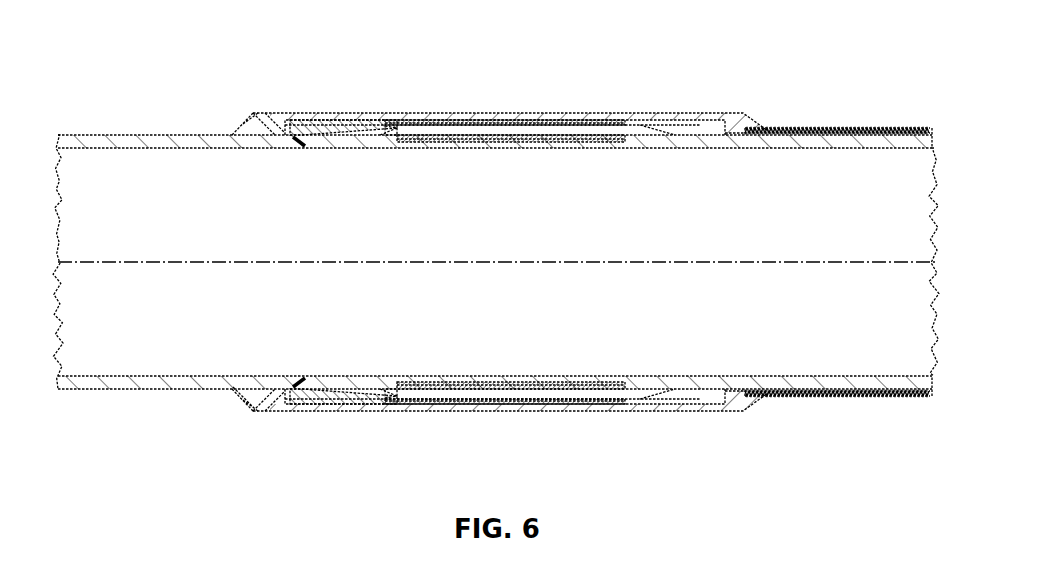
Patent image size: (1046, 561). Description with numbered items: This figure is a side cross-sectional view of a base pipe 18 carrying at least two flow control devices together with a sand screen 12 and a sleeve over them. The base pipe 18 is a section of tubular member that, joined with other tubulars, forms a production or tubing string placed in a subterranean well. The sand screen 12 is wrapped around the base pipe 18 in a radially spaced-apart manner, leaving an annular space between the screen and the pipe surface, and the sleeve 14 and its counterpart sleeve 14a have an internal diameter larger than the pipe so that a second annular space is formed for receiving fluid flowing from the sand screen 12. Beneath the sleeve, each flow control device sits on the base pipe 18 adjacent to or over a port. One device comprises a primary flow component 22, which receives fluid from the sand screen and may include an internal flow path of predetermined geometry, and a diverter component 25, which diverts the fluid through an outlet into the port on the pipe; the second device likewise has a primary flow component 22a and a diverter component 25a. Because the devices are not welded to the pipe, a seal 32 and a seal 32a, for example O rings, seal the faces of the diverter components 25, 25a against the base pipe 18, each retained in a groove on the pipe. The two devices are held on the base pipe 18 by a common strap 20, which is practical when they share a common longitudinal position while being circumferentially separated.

The sand screen 12 is at (822, 126).
The sleeve 14 is at (684, 111).
The sleeve 14a is at (690, 413).
The base pipe 18 is at (160, 163).
The strap 20 is at (340, 114).
The primary flow component 22 is at (485, 126).
The primary flow component 22a is at (432, 413).
The diverter component 25 is at (388, 120).
The diverter component 25a is at (393, 413).
The seal 32 is at (277, 112).
The seal 32a is at (283, 413).